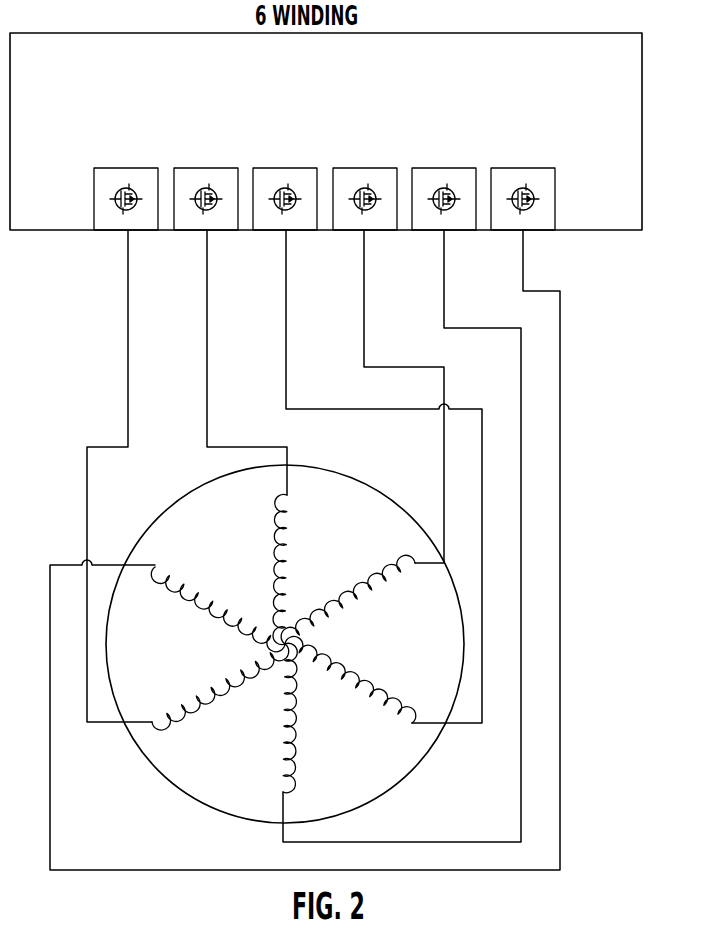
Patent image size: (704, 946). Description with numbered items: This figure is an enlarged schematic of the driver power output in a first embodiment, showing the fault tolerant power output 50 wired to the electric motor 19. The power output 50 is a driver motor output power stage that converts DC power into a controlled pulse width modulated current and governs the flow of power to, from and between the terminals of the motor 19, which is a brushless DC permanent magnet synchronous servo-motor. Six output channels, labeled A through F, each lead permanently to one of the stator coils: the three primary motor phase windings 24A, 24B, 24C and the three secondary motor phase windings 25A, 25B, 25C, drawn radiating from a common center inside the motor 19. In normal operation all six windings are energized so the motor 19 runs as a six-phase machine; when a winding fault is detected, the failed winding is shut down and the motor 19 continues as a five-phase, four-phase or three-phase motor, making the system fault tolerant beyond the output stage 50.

The electric motor 19 is at (600, 513).
The fault tolerant power output 50 is at (591, 92).
The primary motor phase winding 24A is at (205, 708).
The primary motor phase winding 24B is at (287, 560).
The primary motor phase winding 24C is at (370, 693).
The secondary motor phase winding 25A is at (355, 601).
The secondary motor phase winding 25B is at (282, 738).
The secondary motor phase winding 25C is at (209, 617).